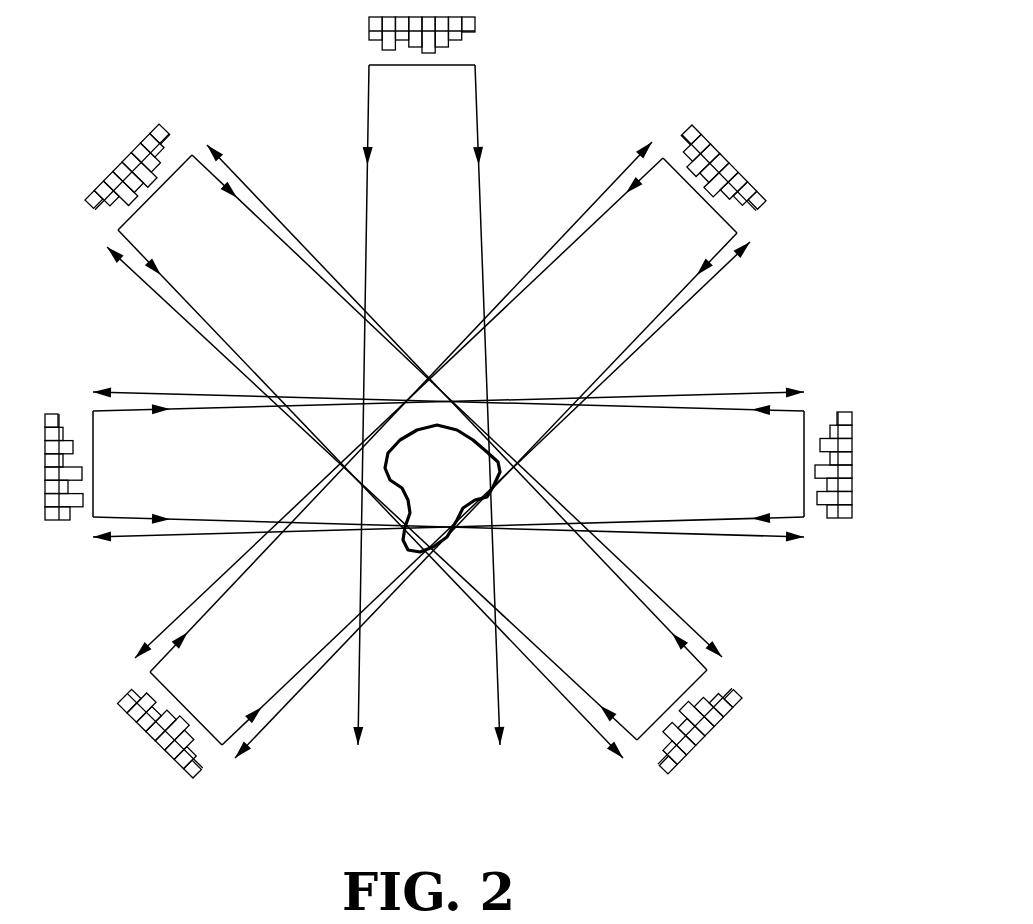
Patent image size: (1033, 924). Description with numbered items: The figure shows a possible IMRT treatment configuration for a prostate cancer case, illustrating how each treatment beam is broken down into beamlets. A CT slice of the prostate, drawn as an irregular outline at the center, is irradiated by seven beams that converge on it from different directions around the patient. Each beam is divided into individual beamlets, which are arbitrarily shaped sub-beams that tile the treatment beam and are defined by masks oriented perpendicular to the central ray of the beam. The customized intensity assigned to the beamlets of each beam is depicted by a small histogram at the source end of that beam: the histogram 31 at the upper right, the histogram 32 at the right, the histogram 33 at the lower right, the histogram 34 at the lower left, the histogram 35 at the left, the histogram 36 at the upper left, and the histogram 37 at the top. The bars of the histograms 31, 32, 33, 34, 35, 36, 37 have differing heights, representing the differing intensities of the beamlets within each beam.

The histogram 31 is at (738, 175).
The histogram 32 is at (859, 445).
The histogram 33 is at (710, 726).
The histogram 34 is at (159, 734).
The histogram 35 is at (64, 505).
The histogram 36 is at (131, 156).
The histogram 37 is at (464, 37).